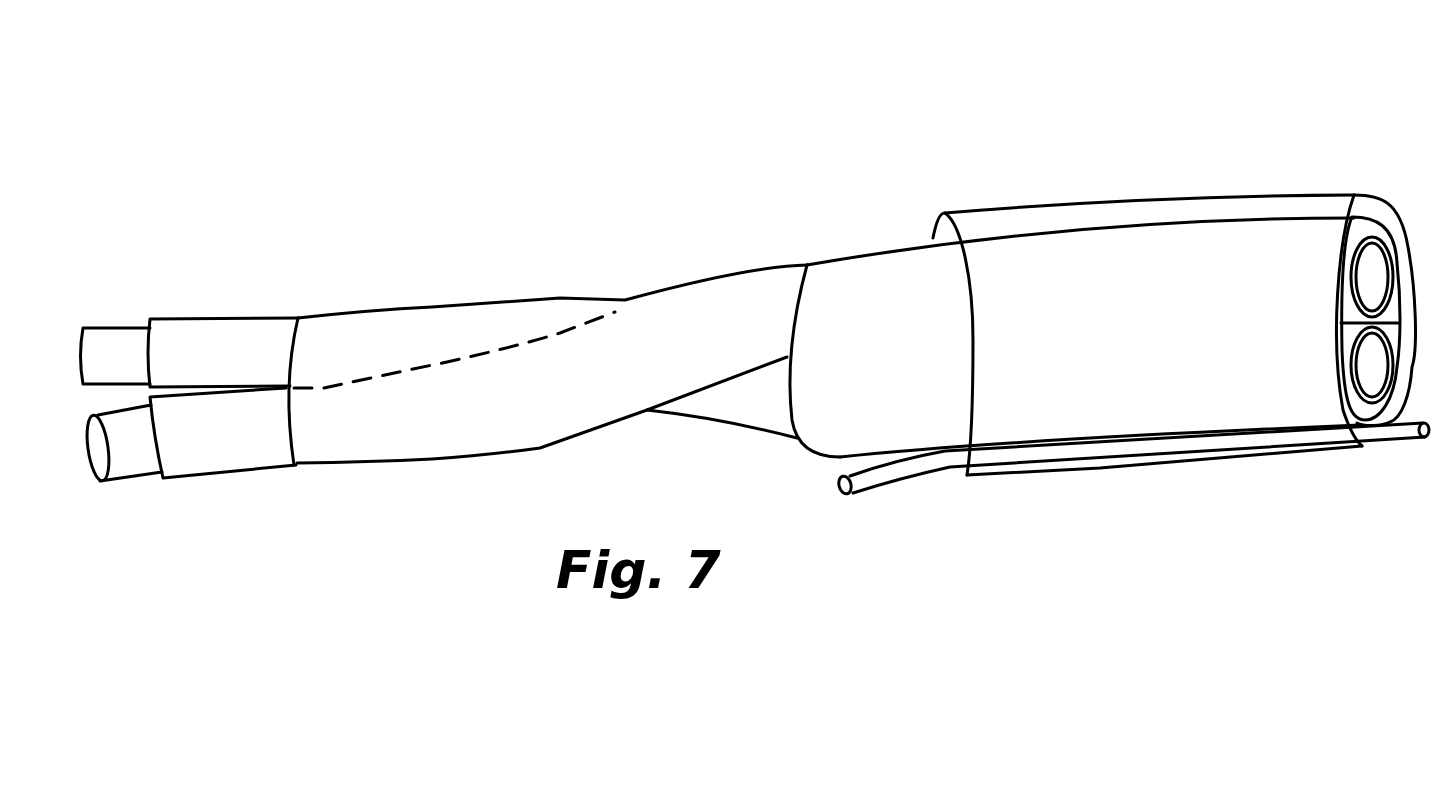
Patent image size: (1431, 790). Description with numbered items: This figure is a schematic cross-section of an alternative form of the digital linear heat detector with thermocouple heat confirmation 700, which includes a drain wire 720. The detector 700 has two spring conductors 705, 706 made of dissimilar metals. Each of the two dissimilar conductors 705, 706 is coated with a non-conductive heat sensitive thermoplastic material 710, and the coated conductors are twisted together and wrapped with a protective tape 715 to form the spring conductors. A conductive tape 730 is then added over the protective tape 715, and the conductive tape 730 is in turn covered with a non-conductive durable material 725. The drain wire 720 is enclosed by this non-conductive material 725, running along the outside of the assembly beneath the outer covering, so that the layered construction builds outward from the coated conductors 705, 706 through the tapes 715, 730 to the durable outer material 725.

The digital linear heat detector with thermocouple heat confirmation 700 is at (755, 332).
The spring conductor 705 is at (141, 296).
The spring conductor 706 is at (145, 498).
The non-conductive heat sensitive thermoplastic material 710 is at (255, 281).
The protective tape 715 is at (434, 285).
The drain wire 720 is at (903, 502).
The non-conductive durable material 725 is at (1165, 173).
The conductive tape 730 is at (895, 218).